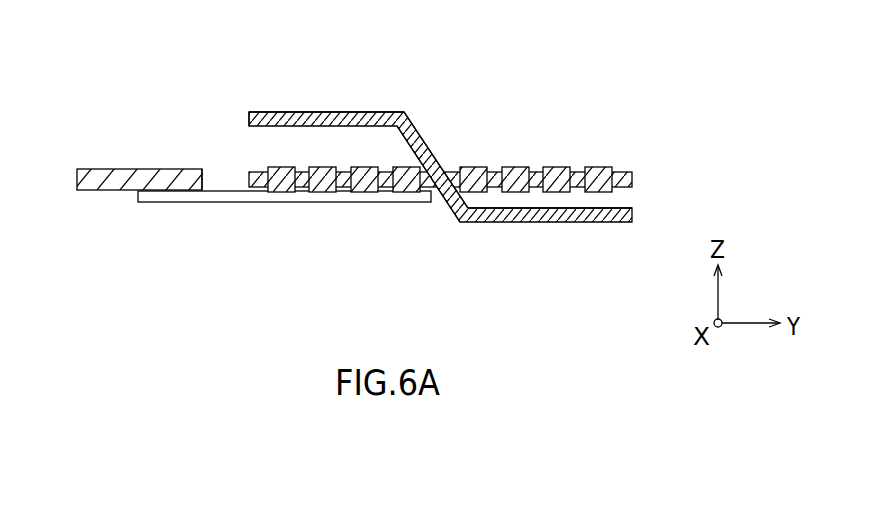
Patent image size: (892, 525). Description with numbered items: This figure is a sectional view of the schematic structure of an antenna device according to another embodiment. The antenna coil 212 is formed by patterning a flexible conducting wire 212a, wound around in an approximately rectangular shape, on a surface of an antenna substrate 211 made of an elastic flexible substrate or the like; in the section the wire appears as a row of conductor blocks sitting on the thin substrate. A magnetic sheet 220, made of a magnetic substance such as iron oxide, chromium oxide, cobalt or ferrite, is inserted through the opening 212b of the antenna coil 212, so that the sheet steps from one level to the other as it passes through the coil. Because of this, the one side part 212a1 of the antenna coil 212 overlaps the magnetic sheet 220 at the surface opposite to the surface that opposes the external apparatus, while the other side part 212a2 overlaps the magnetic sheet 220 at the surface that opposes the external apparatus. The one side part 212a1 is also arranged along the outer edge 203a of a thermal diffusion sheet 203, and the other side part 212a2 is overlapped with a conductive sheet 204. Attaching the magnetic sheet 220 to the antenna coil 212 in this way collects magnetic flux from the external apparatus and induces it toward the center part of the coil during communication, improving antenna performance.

The thermal diffusion sheet 203 is at (103, 178).
The outer edge 203a is at (213, 170).
The conductive sheet 204 is at (183, 196).
The antenna substrate 211 is at (633, 178).
The antenna coil 212 is at (617, 160).
The flexible conducting wire 212a is at (594, 178).
The one side part 212a1 is at (632, 96).
The other side part 212a2 is at (437, 96).
The opening 212b is at (442, 80).
The magnetic sheet 220 is at (247, 118).